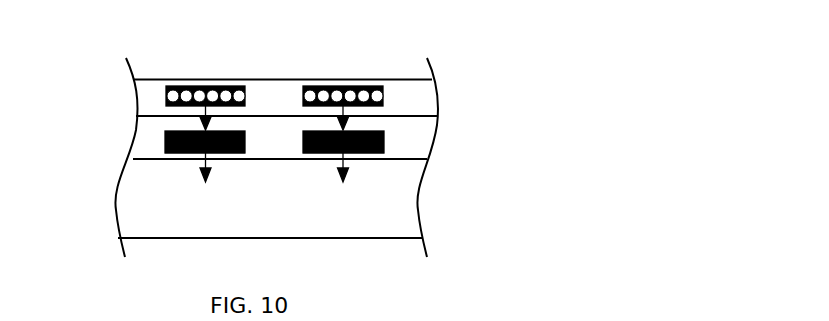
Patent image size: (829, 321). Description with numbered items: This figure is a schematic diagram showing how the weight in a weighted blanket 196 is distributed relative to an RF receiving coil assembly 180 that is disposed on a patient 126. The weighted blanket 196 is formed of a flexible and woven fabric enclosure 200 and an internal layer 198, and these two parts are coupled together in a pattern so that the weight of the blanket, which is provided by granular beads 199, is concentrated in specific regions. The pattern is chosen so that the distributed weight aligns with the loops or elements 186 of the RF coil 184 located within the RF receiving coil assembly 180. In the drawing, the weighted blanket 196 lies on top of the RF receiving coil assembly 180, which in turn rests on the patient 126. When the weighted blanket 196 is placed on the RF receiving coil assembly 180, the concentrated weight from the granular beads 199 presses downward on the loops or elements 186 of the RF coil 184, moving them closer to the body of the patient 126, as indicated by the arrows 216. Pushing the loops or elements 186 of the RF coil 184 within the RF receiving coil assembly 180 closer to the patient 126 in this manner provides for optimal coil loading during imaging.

The weighted blanket 196 is at (152, 80).
The internal layer 198 is at (180, 86).
The granular beads 199 is at (357, 86).
The flexible and woven fabric enclosure 200 is at (423, 95).
The RF receiving coil assembly 180 is at (417, 140).
The patient 126 is at (407, 202).
The RF coil 184 is at (228, 153).
The loops or elements 186 is at (177, 153).
The arrows 216 is at (212, 163).